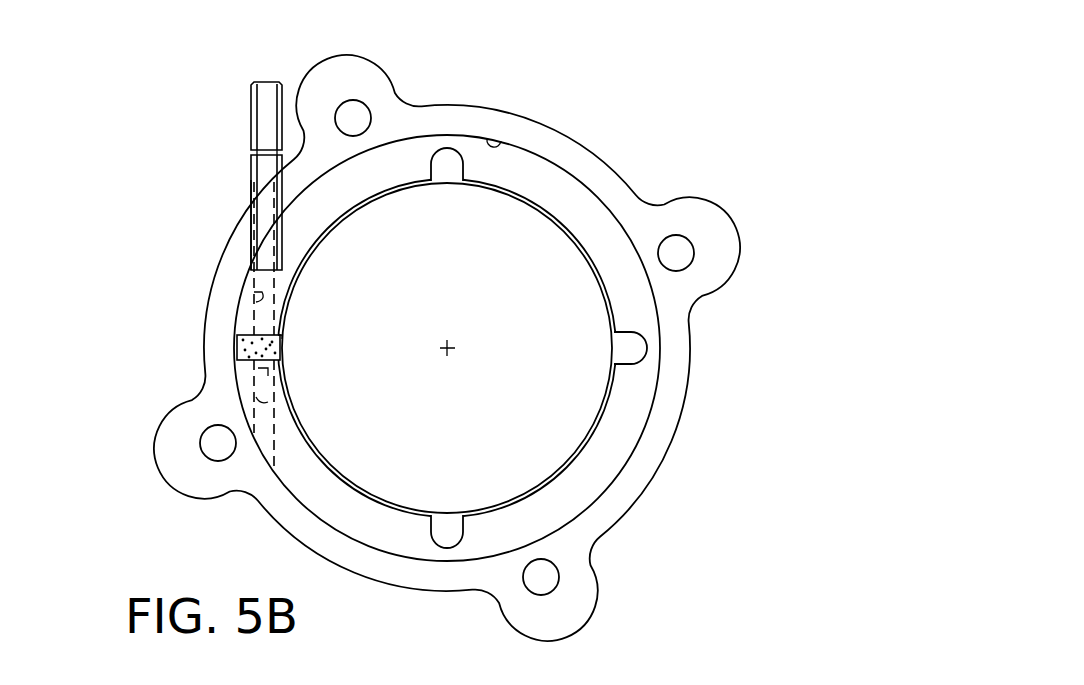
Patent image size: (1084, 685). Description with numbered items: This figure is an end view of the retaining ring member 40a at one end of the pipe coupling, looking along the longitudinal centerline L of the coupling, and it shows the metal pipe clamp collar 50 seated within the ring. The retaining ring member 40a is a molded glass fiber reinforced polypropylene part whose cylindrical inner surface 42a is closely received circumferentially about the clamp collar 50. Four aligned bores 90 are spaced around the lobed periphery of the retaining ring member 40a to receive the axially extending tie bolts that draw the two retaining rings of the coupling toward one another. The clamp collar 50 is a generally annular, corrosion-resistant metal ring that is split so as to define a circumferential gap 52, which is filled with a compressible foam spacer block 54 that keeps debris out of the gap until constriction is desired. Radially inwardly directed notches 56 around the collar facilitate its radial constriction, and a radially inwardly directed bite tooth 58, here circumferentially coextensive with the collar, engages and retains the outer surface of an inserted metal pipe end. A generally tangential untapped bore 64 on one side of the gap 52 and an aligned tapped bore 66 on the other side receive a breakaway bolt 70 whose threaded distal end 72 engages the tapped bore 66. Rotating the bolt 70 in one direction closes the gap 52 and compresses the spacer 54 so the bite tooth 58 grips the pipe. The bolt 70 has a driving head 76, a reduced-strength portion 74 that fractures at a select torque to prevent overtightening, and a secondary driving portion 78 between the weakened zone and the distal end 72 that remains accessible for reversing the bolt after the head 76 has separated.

The retaining ring member 40a is at (587, 138).
The cylindrical inner surface 42a is at (490, 140).
The clamp collar 50 is at (588, 216).
The circumferential gap 52 is at (284, 337).
The spacer block 54 is at (284, 348).
The notches 56 is at (460, 168).
The bite tooth 58 is at (591, 430).
The untapped bore 64 is at (257, 306).
The tapped bore 66 is at (277, 392).
The breakaway bolt 70 is at (250, 172).
The threaded distal end 72 is at (262, 368).
The reduced-strength portion 74 is at (250, 151).
The driving head 76 is at (257, 119).
The secondary driving portion 78 is at (253, 195).
The bores 90 is at (364, 112).
The longitudinal centerline L is at (453, 343).